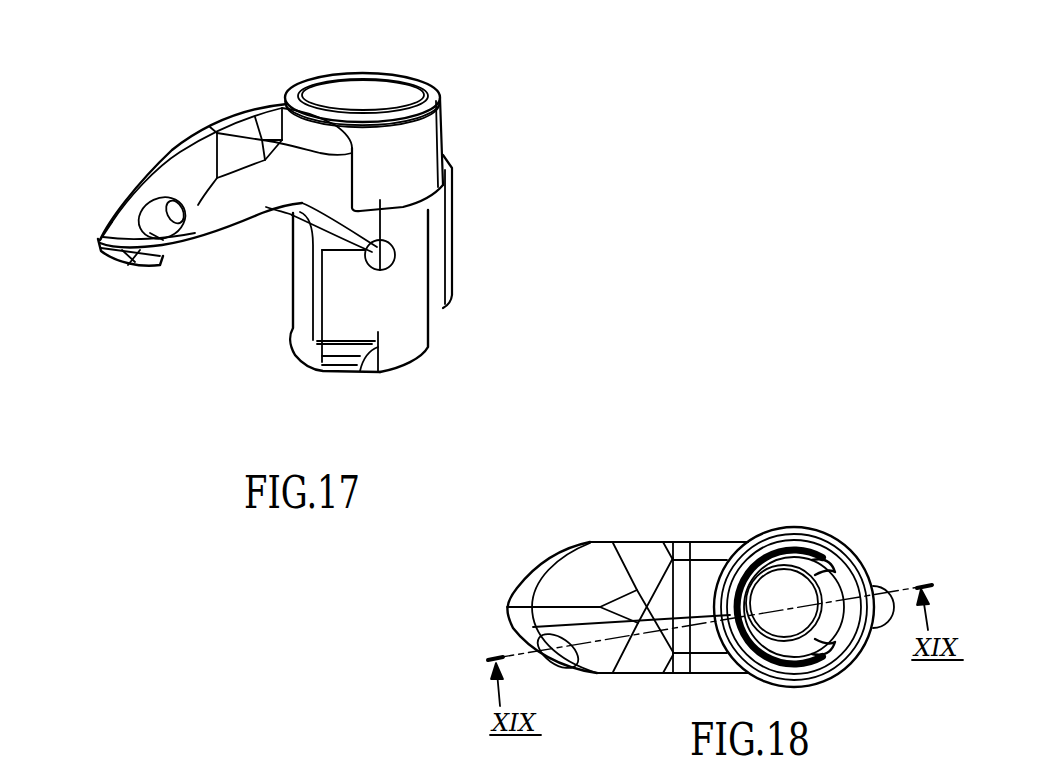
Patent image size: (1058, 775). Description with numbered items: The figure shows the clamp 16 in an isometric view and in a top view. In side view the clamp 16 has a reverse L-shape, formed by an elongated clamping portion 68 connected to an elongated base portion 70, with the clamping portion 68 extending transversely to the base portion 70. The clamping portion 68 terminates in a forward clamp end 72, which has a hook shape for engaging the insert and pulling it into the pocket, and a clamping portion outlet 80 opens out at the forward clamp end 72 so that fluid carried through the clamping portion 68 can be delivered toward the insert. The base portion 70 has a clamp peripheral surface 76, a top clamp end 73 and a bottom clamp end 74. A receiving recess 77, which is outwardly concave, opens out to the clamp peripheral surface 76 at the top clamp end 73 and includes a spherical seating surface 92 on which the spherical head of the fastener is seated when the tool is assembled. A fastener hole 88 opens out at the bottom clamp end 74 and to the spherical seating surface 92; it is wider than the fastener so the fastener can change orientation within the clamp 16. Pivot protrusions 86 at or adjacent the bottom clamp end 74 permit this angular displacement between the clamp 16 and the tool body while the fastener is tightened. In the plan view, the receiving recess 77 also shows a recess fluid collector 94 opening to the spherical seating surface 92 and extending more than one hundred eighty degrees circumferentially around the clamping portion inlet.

In FIG. 17, the clamp 16 is at (482, 105).
In FIG. 17, the clamping portion 68 is at (188, 117).
In FIG. 17, the base portion 70 is at (270, 297).
In FIG. 17, the forward clamp end 72 is at (103, 215).
In FIG. 17, the top clamp end 73 is at (322, 72).
In FIG. 17, the bottom clamp end 74 is at (403, 347).
In FIG. 17, the clamp peripheral surface 76 is at (402, 285).
In FIG. 17, the receiving recess 77 is at (372, 90).
In FIG. 18, the receiving recess 77 is at (805, 583).
In FIG. 17, the clamping portion outlet 80 is at (142, 238).
In FIG. 17, the pivot protrusions 86 is at (370, 363).
In FIG. 18, the fastener hole 88 is at (772, 553).
In FIG. 18, the spherical seating surface 92 is at (843, 588).
In FIG. 18, the recess fluid collector 94 is at (796, 588).